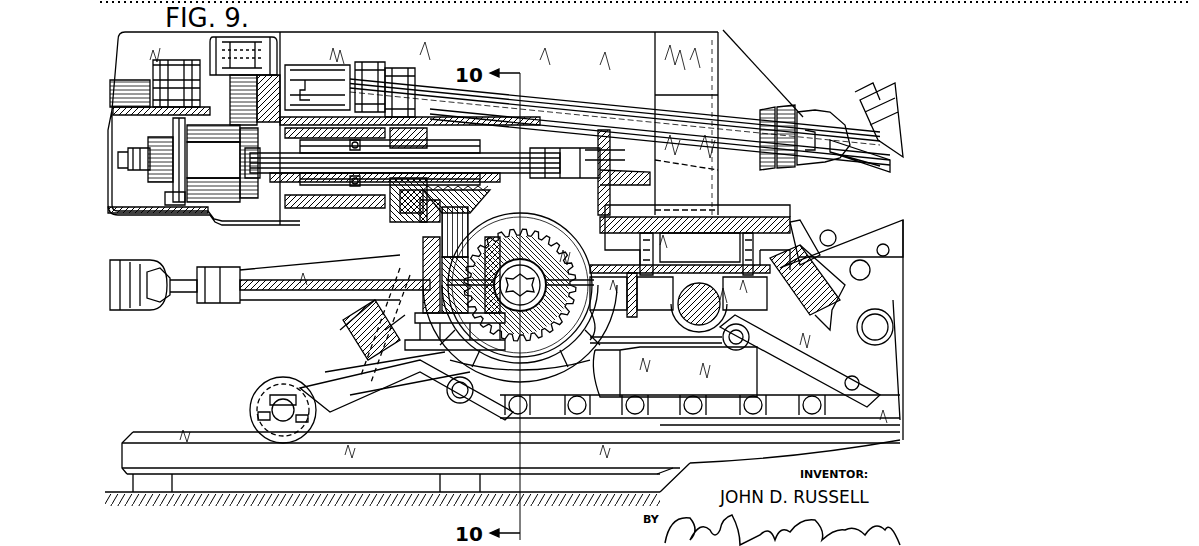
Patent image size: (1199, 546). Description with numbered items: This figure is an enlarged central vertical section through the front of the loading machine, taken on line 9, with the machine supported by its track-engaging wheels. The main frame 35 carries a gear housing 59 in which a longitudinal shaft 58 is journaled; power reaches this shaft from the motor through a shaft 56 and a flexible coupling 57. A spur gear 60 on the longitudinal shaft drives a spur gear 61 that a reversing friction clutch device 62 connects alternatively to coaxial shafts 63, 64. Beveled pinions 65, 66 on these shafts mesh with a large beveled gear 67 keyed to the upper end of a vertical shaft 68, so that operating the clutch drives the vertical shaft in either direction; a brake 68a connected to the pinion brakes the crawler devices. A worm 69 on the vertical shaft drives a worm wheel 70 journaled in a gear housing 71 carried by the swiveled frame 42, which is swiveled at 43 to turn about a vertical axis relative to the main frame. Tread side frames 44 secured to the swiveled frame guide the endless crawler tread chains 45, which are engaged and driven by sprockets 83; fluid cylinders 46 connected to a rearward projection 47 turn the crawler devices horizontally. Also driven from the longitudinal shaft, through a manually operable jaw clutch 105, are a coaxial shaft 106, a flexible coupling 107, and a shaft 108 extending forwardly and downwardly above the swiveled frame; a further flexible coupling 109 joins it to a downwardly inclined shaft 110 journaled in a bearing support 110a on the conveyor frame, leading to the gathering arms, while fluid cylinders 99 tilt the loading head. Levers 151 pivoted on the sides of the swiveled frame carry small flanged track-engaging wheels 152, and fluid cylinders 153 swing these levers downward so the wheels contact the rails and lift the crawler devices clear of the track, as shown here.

The section line 9 is at (197, 432).
The main frame 35 is at (700, 52).
The swiveled frame 42 is at (668, 342).
The swivel 43 is at (790, 228).
The tread side frames 44 is at (705, 395).
The crawler tread chains 45 is at (622, 418).
The fluid cylinders 46 is at (127, 308).
The rearward projection 47 is at (278, 292).
The shaft 56 is at (124, 80).
The flexible coupling 57 is at (177, 63).
The longitudinal shaft 58 is at (240, 78).
The gear housing 59 is at (255, 75).
The spur gear 60 is at (268, 75).
The spur gear 61 is at (248, 210).
The reversing friction clutch device 62 is at (212, 175).
The coaxial shaft 63 is at (330, 178).
The coaxial shaft 64 is at (445, 160).
The beveled pinion 65 is at (400, 150).
The beveled pinion 66 is at (460, 150).
The beveled gear 67 is at (395, 210).
The vertical shaft 68 is at (425, 235).
The brake 68a is at (603, 128).
The worm 69 is at (410, 255).
The worm wheel 70 is at (520, 297).
The gear housing 71 is at (513, 347).
The sprockets 83 is at (440, 380).
The fluid cylinders 99 is at (888, 100).
The jaw clutch 105 is at (316, 63).
The coaxial shaft 106 is at (370, 62).
The flexible coupling 107 is at (410, 68).
The shaft 108 is at (622, 118).
The flexible coupling 109 is at (797, 117).
The downwardly inclined shaft 110 is at (878, 172).
The bearing support 110a is at (838, 115).
The levers 151 is at (385, 372).
The track-engaging wheels 152 is at (250, 393).
The fluid cylinders 153 is at (345, 322).